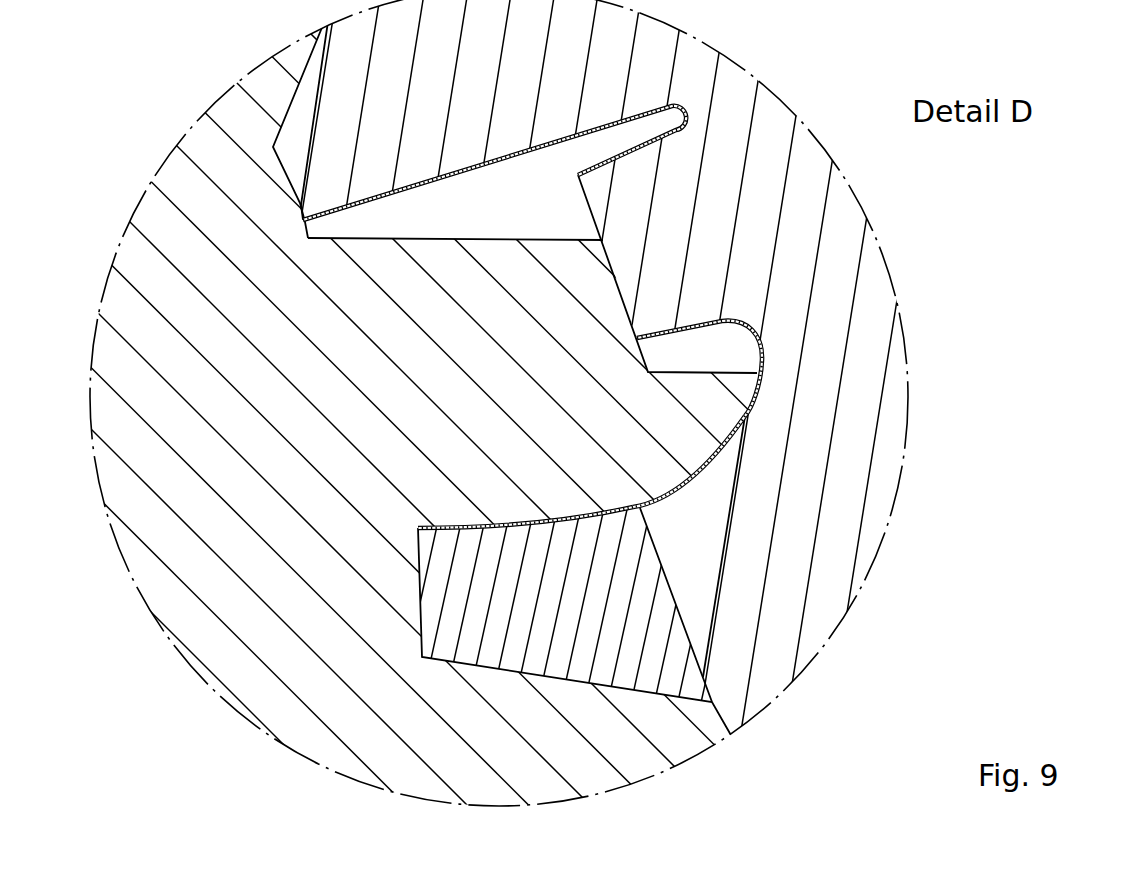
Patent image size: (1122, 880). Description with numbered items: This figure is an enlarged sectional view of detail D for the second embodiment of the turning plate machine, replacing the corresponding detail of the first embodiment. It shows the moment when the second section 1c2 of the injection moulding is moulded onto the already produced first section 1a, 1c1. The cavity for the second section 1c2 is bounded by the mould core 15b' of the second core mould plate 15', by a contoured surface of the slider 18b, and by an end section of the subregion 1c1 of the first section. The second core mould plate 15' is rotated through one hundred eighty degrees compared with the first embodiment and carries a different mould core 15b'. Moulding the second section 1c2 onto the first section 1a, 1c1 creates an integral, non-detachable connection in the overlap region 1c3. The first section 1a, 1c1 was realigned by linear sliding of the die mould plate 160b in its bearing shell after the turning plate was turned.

The second core mould plate 15' is at (561, 440).
The mould core 15b' is at (455, 221).
The first section of the injection moulding 1a is at (546, 143).
The subregion of the first section of the injection moulding 1c1 is at (747, 418).
The second section of the injection moulding 1c2 is at (567, 521).
The overlap region 1c3 is at (668, 501).
The slider 18b is at (577, 611).
The die mould plate 160b is at (833, 627).